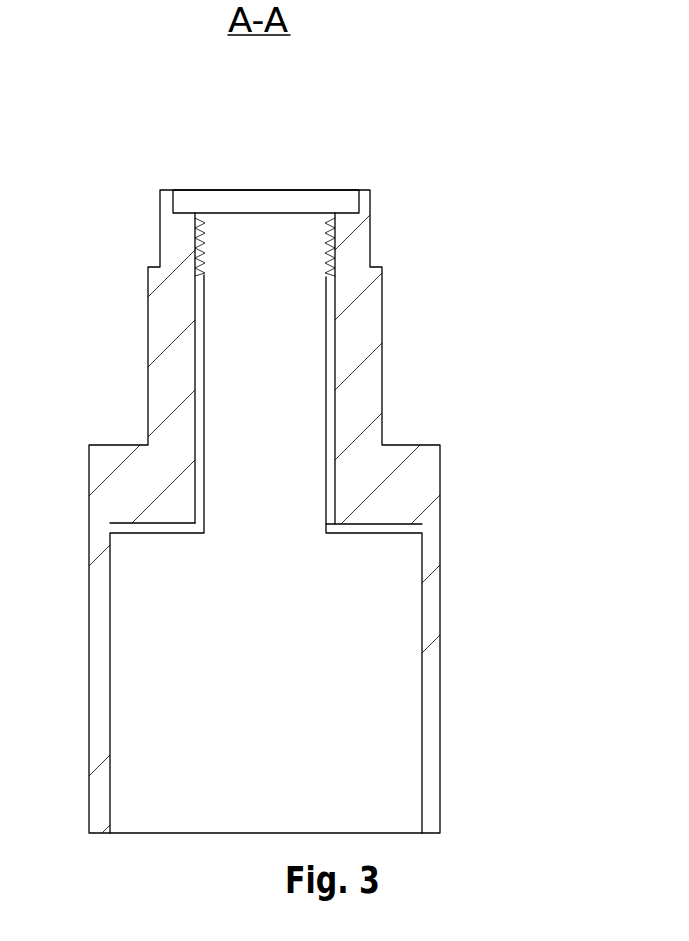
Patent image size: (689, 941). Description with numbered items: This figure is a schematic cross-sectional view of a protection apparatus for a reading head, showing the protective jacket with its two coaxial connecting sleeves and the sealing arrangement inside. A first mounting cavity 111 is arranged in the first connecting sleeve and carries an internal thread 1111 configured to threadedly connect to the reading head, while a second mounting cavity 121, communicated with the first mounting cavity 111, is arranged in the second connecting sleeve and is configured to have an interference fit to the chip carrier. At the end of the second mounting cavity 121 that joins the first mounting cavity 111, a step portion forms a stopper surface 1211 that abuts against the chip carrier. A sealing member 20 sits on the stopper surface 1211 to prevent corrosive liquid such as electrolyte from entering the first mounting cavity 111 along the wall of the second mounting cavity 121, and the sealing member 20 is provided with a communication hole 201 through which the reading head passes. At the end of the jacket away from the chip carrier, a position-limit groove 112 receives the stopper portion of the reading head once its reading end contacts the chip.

The position-limit groove 112 is at (340, 190).
The internal thread 1111 is at (197, 245).
The first mounting cavity 111 is at (285, 320).
The stopper surface 1211 is at (370, 523).
The second mounting cavity 121 is at (320, 648).
The sealing member 20 is at (163, 532).
The communication hole 201 is at (258, 555).